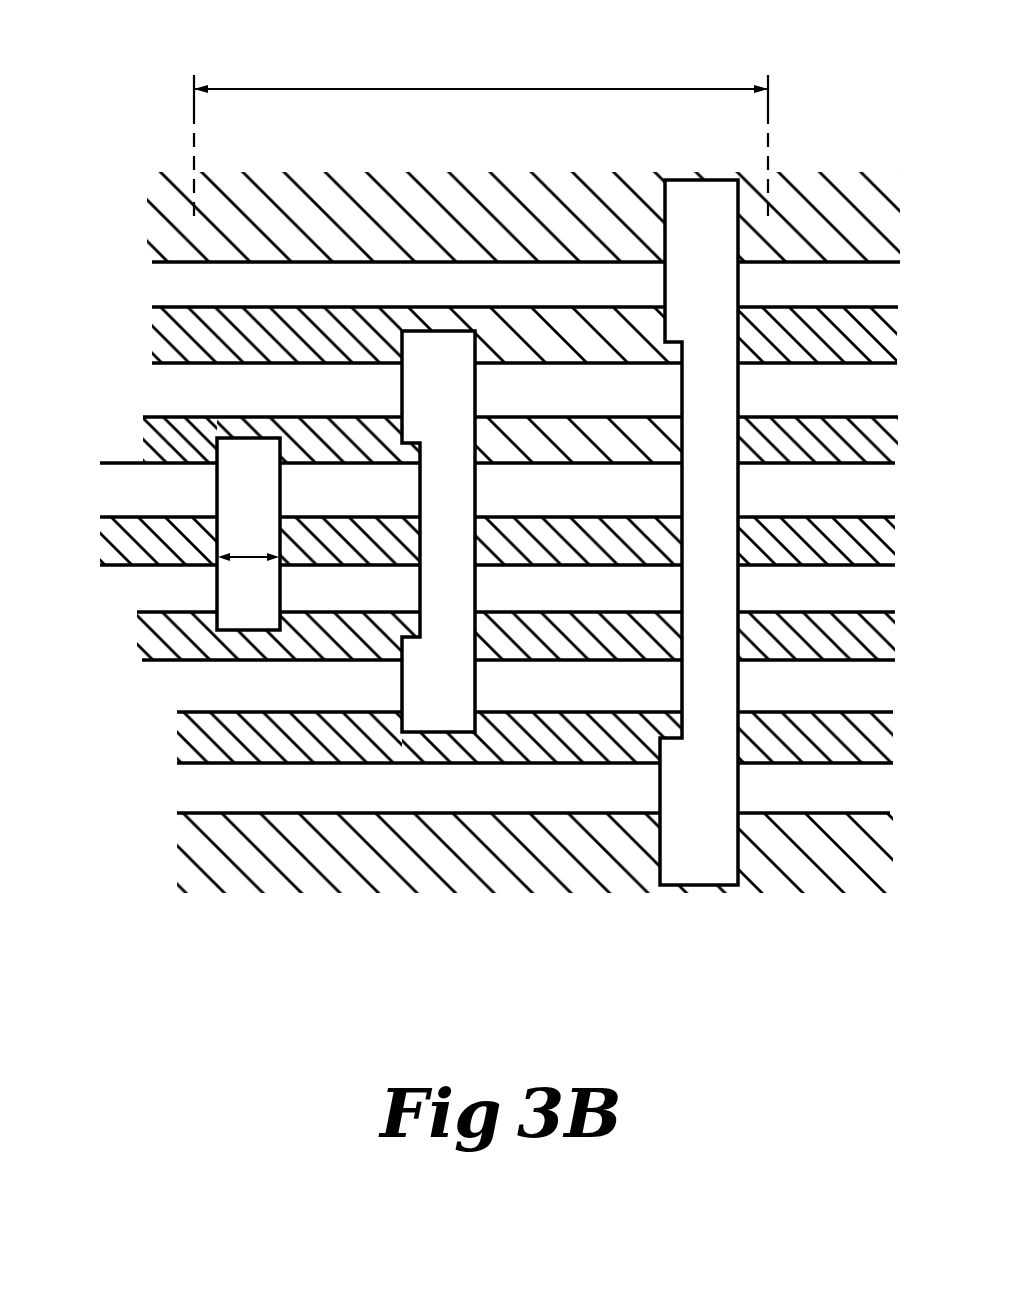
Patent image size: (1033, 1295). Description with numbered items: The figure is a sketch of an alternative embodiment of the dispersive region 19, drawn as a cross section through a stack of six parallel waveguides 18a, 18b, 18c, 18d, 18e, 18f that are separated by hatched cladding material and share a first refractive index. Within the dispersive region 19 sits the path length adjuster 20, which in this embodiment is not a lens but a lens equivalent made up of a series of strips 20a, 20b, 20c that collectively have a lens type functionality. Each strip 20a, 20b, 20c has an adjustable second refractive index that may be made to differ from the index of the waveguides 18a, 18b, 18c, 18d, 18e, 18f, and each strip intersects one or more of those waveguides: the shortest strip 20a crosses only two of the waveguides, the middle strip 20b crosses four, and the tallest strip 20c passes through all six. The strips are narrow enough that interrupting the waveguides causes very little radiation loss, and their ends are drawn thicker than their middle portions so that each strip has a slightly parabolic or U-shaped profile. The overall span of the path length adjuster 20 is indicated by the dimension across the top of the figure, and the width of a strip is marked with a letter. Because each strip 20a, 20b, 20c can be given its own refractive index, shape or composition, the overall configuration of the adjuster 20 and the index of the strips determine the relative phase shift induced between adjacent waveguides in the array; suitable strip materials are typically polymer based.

The waveguide 18a is at (195, 785).
The waveguide 18b is at (188, 684).
The waveguide 18c is at (122, 590).
The waveguide 18d is at (117, 480).
The waveguide 18e is at (177, 385).
The waveguide 18f is at (177, 279).
The dispersive region 19 is at (418, 892).
The path length adjuster 20 is at (462, 88).
The strip 20a is at (215, 624).
The strip 20b is at (400, 718).
The strip 20c is at (702, 870).